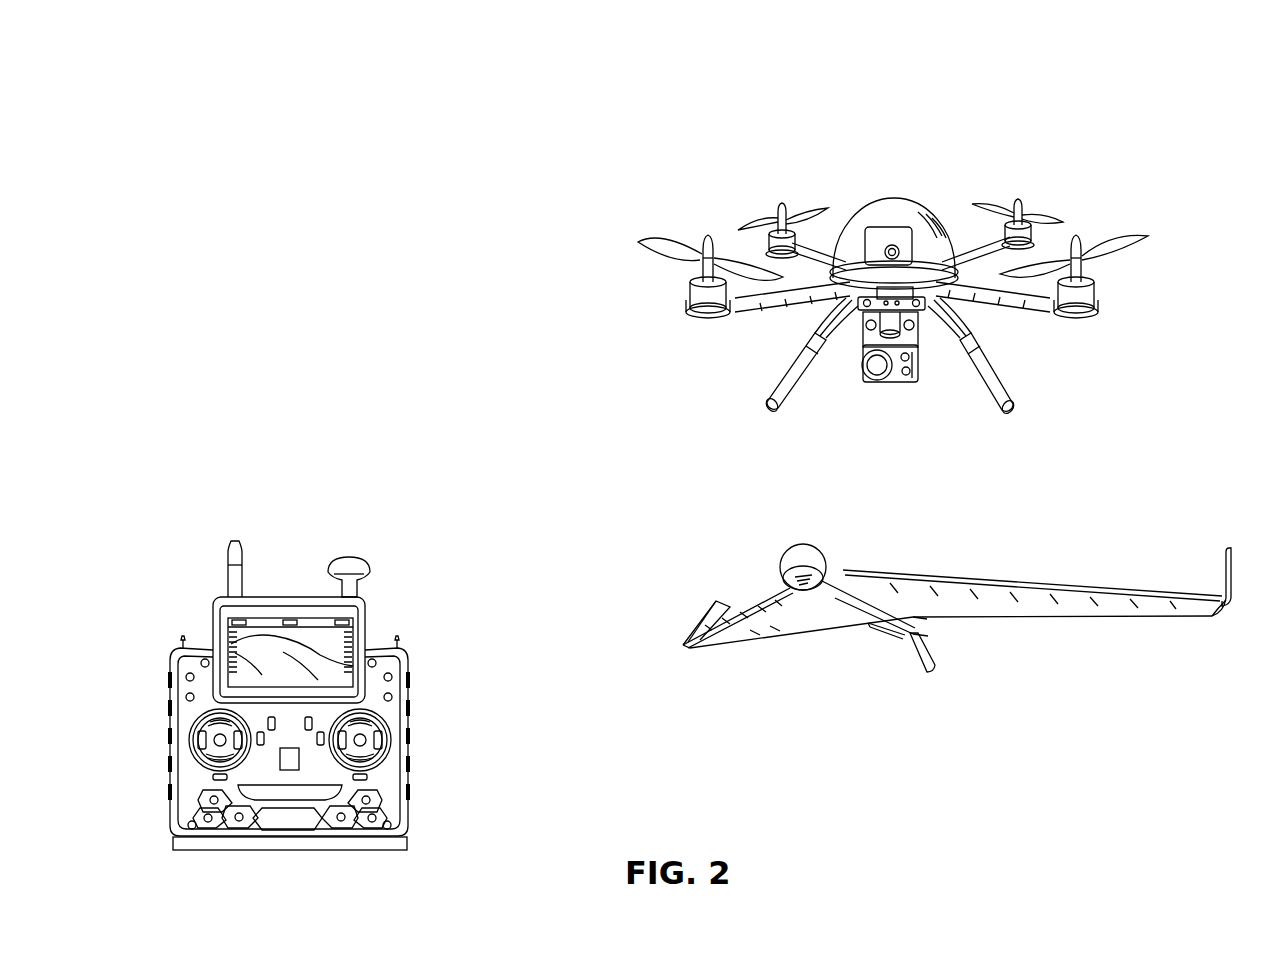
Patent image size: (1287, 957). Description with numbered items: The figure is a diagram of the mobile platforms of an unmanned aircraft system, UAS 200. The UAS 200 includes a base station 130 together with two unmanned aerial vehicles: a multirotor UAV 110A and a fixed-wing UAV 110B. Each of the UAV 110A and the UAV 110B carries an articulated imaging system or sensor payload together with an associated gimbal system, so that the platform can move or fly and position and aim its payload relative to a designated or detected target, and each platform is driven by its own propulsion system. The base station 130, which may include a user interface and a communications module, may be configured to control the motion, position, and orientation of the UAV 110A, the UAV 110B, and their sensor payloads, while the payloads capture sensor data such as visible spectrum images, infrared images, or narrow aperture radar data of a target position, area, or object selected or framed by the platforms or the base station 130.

The UAS 200 is at (199, 70).
The UAV 110A is at (711, 171).
The UAV 110B is at (745, 663).
The base station 130 is at (403, 573).